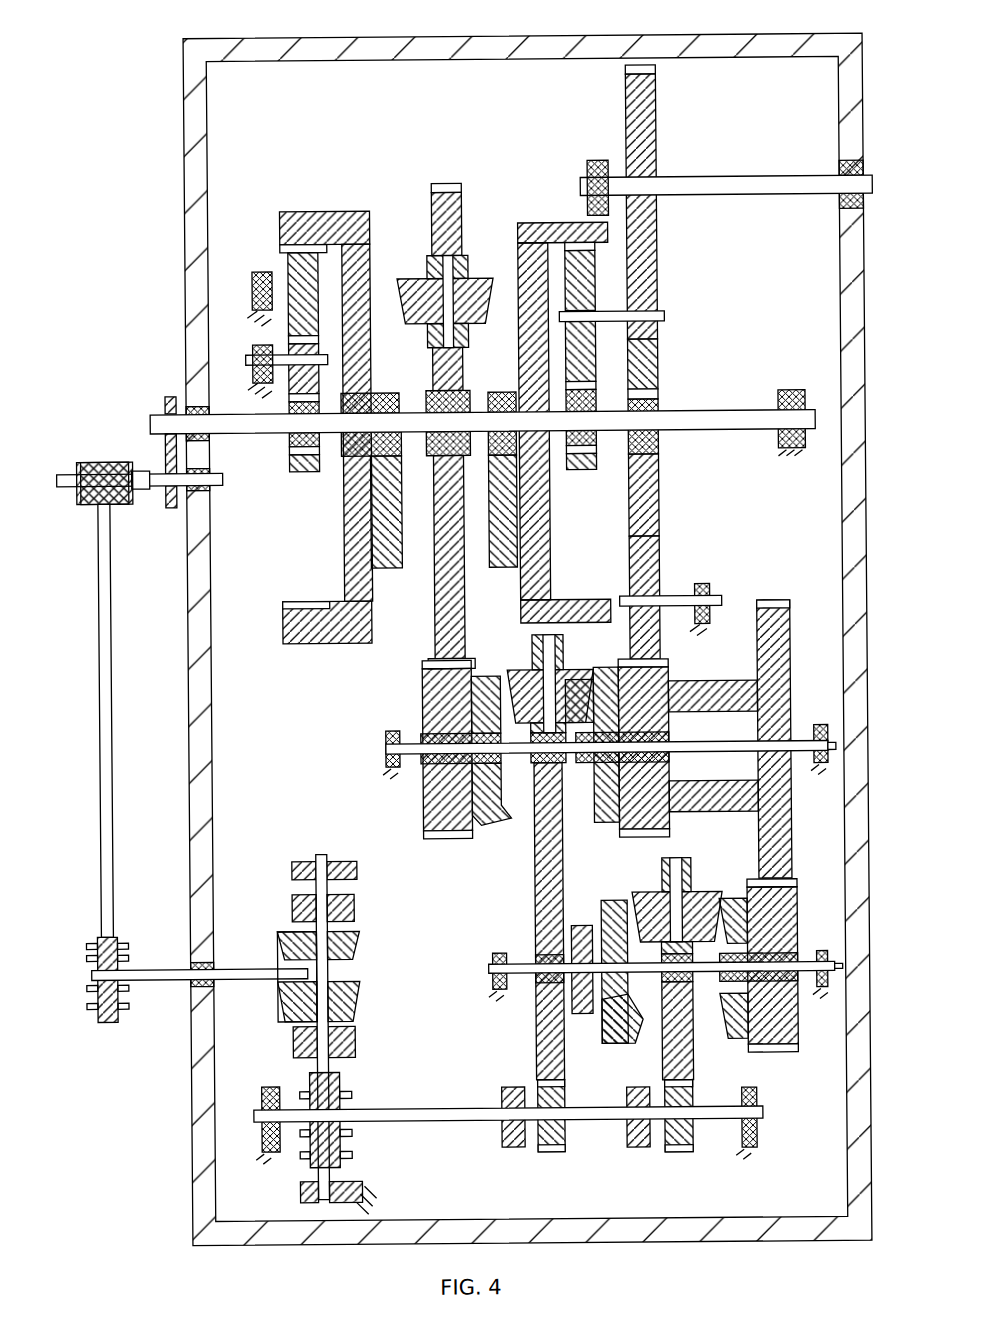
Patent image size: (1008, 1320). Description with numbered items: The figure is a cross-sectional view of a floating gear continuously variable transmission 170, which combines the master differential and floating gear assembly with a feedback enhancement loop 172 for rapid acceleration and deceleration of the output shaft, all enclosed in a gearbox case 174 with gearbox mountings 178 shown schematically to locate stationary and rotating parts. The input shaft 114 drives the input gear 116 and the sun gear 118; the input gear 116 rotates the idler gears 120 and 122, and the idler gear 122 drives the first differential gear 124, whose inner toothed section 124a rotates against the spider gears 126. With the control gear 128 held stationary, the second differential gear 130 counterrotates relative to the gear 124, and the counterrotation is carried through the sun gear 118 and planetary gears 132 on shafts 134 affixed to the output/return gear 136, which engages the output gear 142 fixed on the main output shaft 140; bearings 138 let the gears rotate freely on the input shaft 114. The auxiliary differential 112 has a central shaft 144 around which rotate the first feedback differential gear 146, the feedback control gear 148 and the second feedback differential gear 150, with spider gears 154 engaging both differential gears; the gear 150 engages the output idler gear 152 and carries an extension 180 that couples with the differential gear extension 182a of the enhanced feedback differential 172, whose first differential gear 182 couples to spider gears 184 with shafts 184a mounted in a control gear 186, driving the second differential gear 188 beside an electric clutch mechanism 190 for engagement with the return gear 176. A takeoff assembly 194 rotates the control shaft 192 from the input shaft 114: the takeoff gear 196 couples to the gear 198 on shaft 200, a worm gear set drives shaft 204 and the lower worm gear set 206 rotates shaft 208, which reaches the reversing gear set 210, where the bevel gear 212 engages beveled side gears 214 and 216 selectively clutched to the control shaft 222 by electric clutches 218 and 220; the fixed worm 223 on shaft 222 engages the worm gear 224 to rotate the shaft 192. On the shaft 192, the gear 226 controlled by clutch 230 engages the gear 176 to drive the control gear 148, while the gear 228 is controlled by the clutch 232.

The auxiliary differential 112 is at (694, 660).
The input shaft 114 is at (158, 410).
The input gear 116 is at (308, 470).
The sun gear 118 is at (580, 458).
The idler gear 120 is at (286, 338).
The idler gear 122 is at (289, 264).
The first differential gear 124 is at (320, 429).
The inner toothed section 124a is at (385, 570).
The spider gear 126 is at (432, 276).
The control gear 128 is at (432, 182).
The second differential gear 130 is at (528, 220).
The planetary gear 132 is at (592, 288).
The shaft 134 is at (606, 314).
The output/return gear 136 is at (660, 362).
The bearing 138 is at (660, 394).
The main output shaft 140 is at (670, 172).
The output gear 142 is at (660, 102).
The central shaft 144 is at (420, 714).
The first feedback differential gear 146 is at (422, 804).
The feedback control gear 148 is at (534, 853).
The second feedback differential gear 150 is at (600, 674).
The output idler gear 152 is at (660, 559).
The spider gear 154 is at (519, 668).
The floating gear continuously variable transmission 170 is at (702, 22).
The enhanced feedback differential 172 is at (812, 936).
The gearbox case 174 is at (866, 358).
The return gear 176 is at (534, 890).
The gearbox mounting 178 is at (602, 162).
The extension 180 is at (772, 602).
The first differential gear 182 is at (757, 884).
The differential gear extension 182a is at (770, 1054).
The spider gear 184 is at (648, 892).
The shaft 184a is at (674, 858).
The control gear 186 is at (686, 1040).
The second differential gear 188 is at (612, 986).
The electric clutch mechanism 190 is at (579, 926).
The control shaft 192 is at (383, 1106).
The takeoff assembly 194 is at (92, 765).
The takeoff gear 196 is at (170, 394).
The gear 198 is at (172, 506).
The shaft 200 is at (226, 474).
The shaft 204 is at (111, 630).
The lower worm gear set 206 is at (112, 940).
The shaft 208 is at (190, 980).
The reversing gear set 210 is at (362, 980).
The bevel gear 212 is at (277, 946).
The beveled side gear 214 is at (355, 945).
The beveled side gear 216 is at (357, 1012).
The electric clutch 218 is at (352, 904).
The electric clutch 220 is at (129, 458).
The control shaft 222 is at (312, 850).
The worm 223 is at (346, 1127).
The worm gear 224 is at (337, 1154).
The gear 226 is at (546, 1152).
The gear 228 is at (674, 1154).
The electric clutch 230 is at (508, 1150).
The clutch 232 is at (642, 1150).